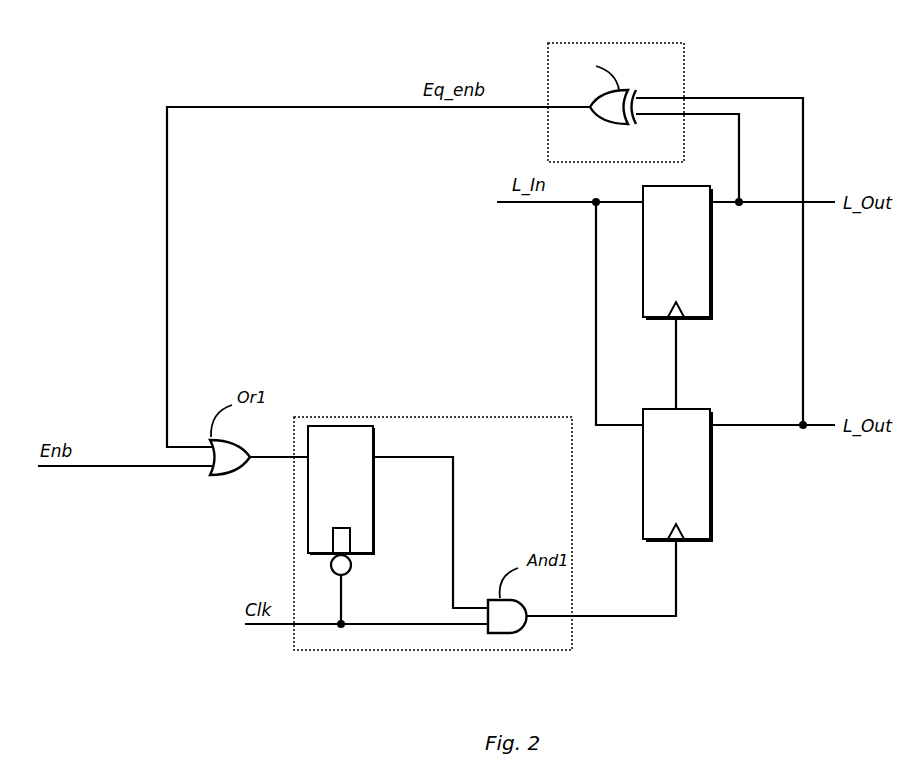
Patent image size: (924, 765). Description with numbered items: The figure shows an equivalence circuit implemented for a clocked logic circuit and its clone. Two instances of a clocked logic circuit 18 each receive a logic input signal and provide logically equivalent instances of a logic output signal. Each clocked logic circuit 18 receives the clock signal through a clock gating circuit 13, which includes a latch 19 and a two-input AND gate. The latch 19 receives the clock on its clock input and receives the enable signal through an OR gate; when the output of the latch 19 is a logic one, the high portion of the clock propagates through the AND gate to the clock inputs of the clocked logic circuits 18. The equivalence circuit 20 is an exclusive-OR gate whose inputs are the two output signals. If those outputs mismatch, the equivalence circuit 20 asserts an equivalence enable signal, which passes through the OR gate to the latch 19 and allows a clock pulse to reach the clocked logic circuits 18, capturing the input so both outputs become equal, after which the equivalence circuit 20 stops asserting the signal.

The equivalence circuit 20 is at (684, 41).
The clock gating circuit 13 is at (422, 417).
The latch 19 is at (341, 500).
The clocked logic circuit (CLC) 18 is at (678, 364).